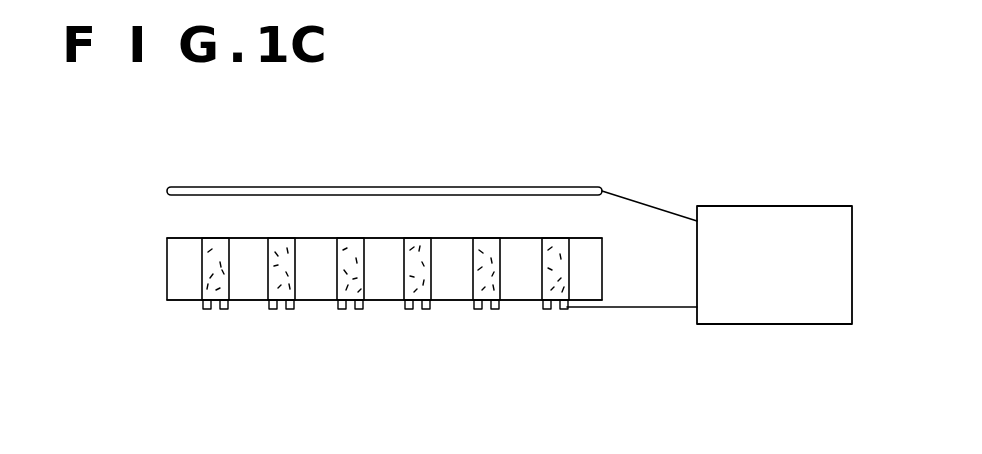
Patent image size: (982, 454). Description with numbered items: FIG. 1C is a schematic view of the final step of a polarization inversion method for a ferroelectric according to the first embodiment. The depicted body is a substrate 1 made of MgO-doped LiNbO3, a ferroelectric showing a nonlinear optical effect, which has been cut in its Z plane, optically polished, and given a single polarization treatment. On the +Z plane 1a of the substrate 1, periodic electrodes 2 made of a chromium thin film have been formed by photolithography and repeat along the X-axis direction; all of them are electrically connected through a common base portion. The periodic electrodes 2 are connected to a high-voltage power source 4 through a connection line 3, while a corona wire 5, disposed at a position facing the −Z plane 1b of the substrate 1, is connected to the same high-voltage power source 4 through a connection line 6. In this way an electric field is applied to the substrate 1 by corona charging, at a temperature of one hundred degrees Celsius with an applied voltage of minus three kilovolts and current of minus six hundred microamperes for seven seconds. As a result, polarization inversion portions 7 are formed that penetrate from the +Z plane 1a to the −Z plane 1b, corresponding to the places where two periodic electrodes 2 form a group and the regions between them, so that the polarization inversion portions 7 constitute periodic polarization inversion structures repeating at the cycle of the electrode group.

The substrate 1 is at (157, 262).
The +Z plane 1a is at (193, 303).
The −Z plane 1b is at (217, 238).
The periodic electrodes 2 is at (273, 310).
The connection line 3 is at (632, 308).
The high-voltage power source 4 is at (793, 206).
The corona wire 5 is at (460, 187).
The connection line 6 is at (660, 208).
The polarization inversion portions 7 is at (473, 267).